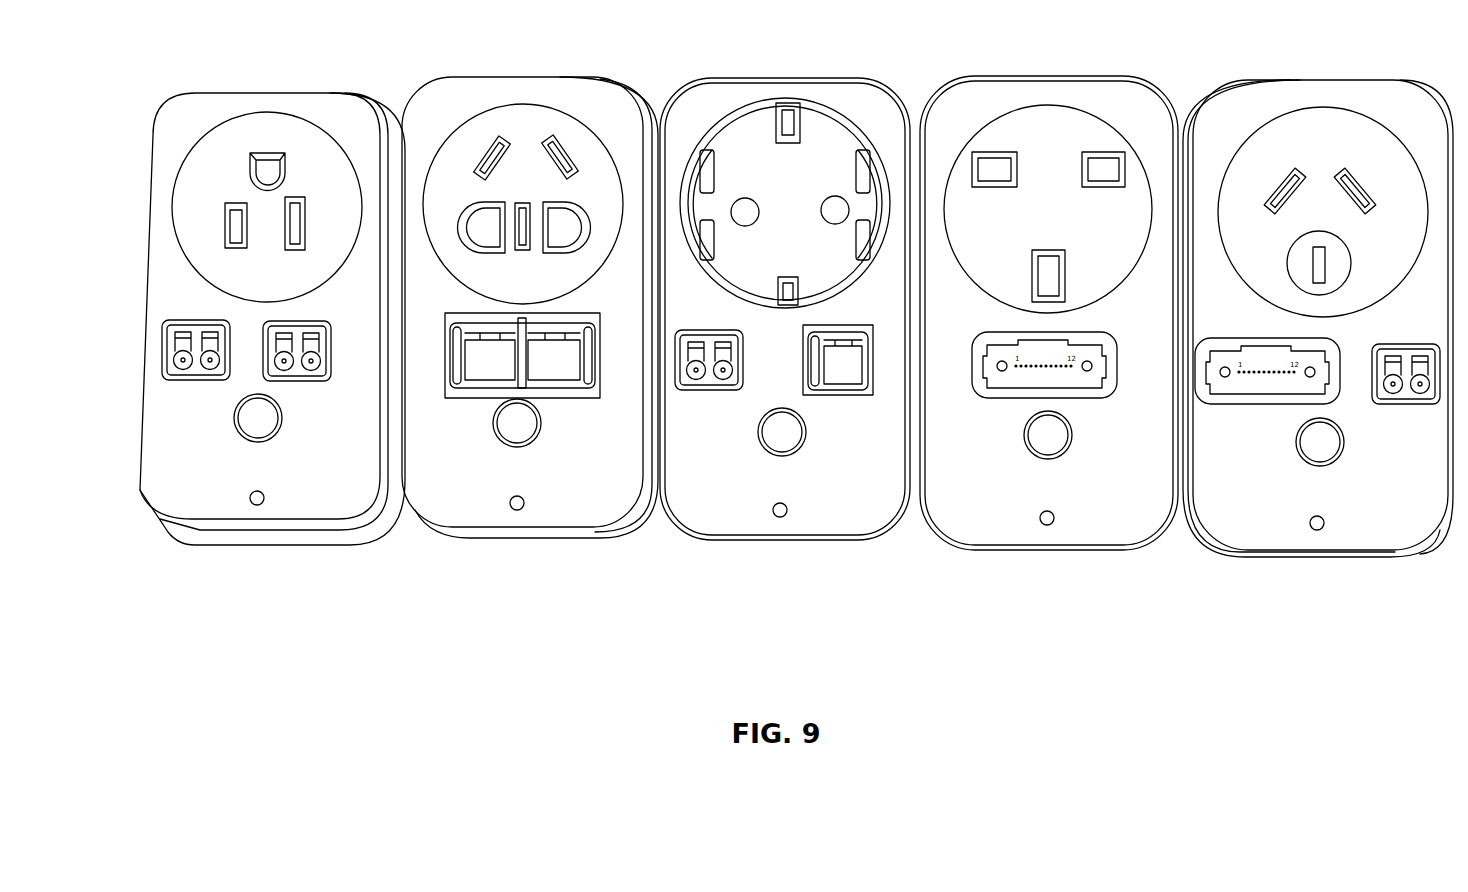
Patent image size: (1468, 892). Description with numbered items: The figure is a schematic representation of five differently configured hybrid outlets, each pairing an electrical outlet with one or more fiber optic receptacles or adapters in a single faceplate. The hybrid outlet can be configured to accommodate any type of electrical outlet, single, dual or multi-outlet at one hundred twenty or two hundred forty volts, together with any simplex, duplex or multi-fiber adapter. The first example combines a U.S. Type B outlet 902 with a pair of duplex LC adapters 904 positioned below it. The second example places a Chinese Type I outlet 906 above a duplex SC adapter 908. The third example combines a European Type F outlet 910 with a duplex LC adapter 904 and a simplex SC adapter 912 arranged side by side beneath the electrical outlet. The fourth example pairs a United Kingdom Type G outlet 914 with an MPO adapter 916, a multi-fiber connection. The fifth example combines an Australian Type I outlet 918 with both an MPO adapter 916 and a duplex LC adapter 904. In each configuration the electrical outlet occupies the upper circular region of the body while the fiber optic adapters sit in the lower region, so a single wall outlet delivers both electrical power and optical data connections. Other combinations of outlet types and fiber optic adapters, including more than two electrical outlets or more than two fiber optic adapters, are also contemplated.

The U.S. Type B outlet 902 is at (208, 222).
The duplex LC adapter 904 is at (190, 383).
The Chinese Type I outlet 906 is at (583, 152).
The duplex SC adapter 908 is at (473, 398).
The European Type F outlet 910 is at (855, 127).
The simplex SC adapter 912 is at (860, 397).
The United Kingdom Type G outlet 914 is at (1097, 138).
The MPO adapter 916 is at (1058, 374).
The Australian Type I outlet 918 is at (1378, 147).